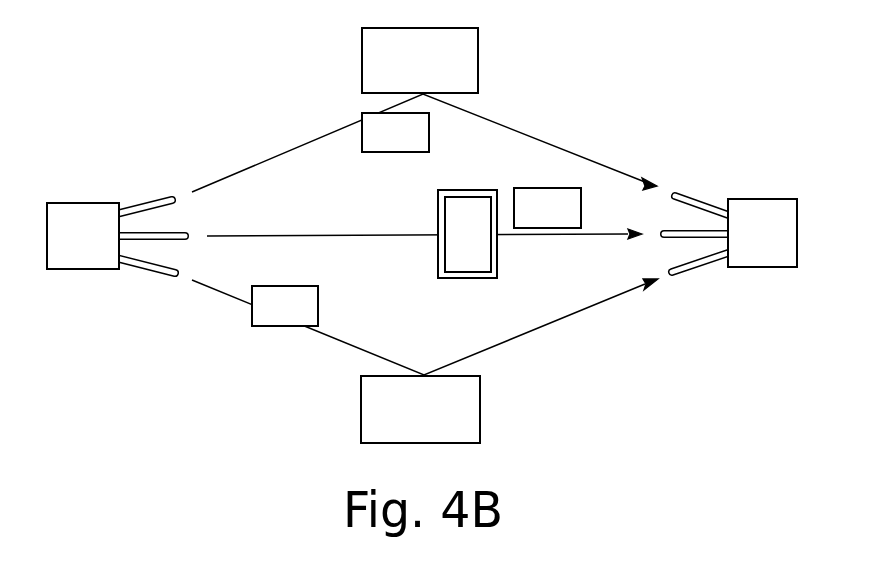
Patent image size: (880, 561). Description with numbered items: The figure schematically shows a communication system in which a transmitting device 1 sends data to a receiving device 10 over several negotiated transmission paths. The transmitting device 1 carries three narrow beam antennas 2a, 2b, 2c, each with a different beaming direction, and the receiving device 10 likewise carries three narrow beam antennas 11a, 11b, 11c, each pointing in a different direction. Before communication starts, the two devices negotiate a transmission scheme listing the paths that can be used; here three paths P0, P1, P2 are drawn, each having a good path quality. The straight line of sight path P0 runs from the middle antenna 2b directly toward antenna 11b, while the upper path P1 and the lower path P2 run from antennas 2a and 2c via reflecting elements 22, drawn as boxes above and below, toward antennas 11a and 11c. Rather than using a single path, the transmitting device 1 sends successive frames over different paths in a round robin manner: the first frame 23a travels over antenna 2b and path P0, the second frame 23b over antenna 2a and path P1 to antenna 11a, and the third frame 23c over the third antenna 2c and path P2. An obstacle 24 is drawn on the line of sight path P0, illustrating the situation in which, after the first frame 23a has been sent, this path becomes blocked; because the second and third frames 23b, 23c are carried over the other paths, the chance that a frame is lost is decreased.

The transmitting device 1 is at (91, 248).
The narrow beam antenna 2a is at (143, 204).
The narrow beam antenna 2b is at (189, 238).
The narrow beam antenna 2c is at (150, 277).
The receiving device 10 is at (775, 245).
The narrow beam antenna 11a is at (705, 195).
The narrow beam antenna 11b is at (659, 237).
The narrow beam antenna 11c is at (691, 276).
The reflector 22 is at (433, 75).
The first frame 23a is at (566, 222).
The second frame 23b is at (414, 146).
The third frame 23c is at (303, 320).
The obstacle 24 is at (481, 245).
The transmission path P0 is at (391, 236).
The transmission path P1 is at (572, 152).
The transmission path P2 is at (546, 326).